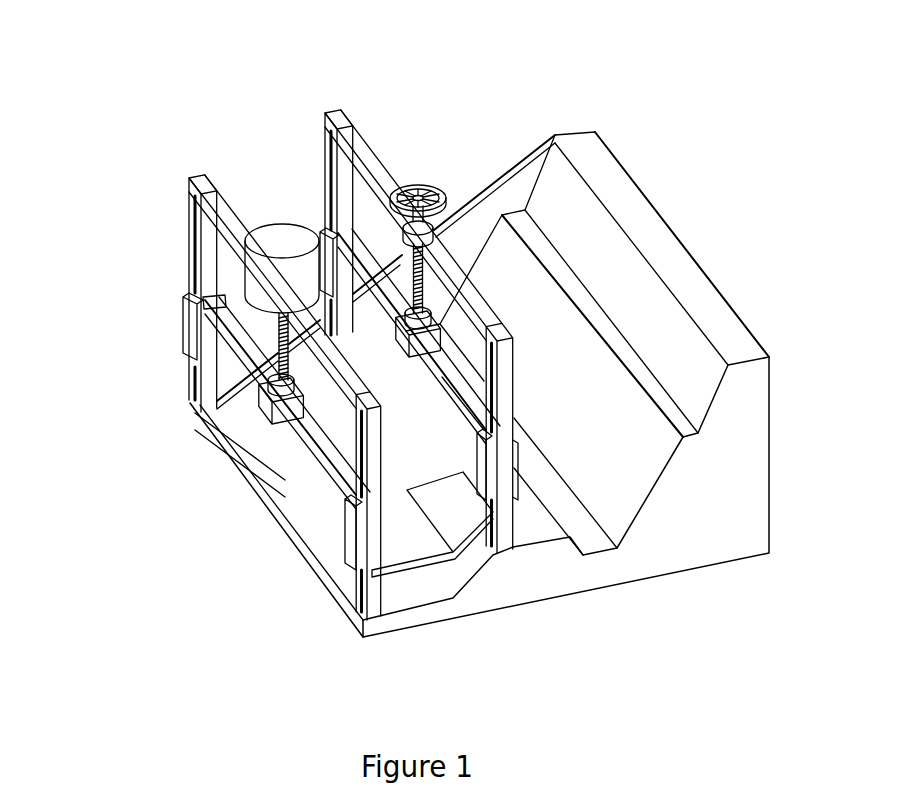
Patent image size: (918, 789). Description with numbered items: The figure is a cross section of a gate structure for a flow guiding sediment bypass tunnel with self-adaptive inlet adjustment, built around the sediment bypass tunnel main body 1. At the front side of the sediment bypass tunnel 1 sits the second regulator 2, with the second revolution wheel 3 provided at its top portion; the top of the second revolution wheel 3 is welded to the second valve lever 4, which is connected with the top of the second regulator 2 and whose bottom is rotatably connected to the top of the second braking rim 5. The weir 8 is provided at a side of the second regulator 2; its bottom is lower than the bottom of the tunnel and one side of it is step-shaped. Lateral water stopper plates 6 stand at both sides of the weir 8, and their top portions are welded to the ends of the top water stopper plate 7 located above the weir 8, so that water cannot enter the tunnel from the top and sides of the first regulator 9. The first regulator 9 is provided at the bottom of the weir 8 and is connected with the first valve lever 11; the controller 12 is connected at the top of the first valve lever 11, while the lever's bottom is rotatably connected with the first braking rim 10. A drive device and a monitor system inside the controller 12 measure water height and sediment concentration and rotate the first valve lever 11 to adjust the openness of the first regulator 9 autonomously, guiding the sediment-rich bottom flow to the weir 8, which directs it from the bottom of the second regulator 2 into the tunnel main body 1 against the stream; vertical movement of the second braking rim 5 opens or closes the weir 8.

The sediment bypass tunnel main body 1 is at (588, 467).
The second regulator 2 is at (335, 205).
The second revolution wheel 3 is at (410, 195).
The second valve lever 4 is at (447, 212).
The second braking rim 5 is at (483, 367).
The lateral water stopper plate 6 is at (226, 310).
The top water stopper plate 7 is at (407, 540).
The weir 8 is at (393, 590).
The first regulator 9 is at (367, 458).
The first braking rim 10 is at (283, 442).
The first valve lever 11 is at (273, 330).
The controller 12 is at (262, 272).